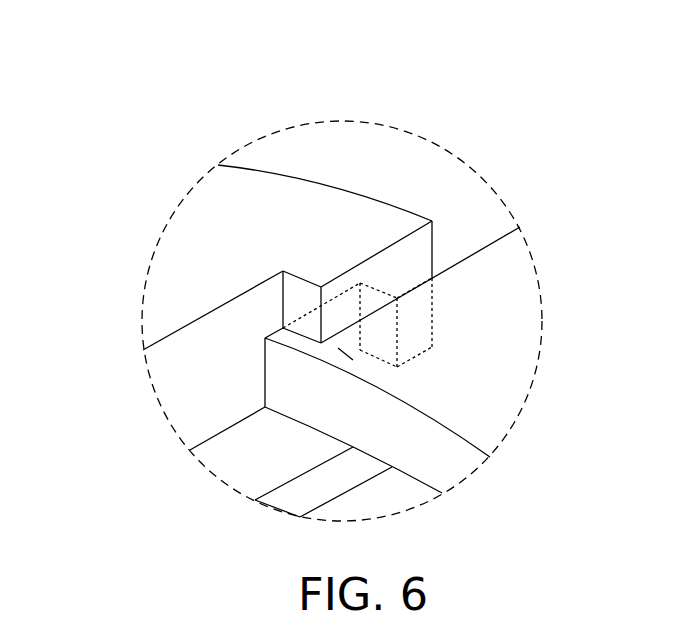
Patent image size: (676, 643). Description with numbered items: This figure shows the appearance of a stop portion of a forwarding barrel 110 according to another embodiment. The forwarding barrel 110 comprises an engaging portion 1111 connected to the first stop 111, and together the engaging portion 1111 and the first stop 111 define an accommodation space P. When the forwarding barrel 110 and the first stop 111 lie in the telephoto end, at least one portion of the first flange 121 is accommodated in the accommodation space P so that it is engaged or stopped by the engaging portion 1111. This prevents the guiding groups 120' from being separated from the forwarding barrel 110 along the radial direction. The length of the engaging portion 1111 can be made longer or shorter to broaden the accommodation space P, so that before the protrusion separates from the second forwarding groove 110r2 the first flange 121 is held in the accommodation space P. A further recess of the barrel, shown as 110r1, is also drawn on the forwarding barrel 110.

The forwarding barrel 110 is at (289, 307).
The first stop 111 is at (397, 225).
The engaging portion 1111 is at (320, 270).
The first recess 110r1 is at (187, 343).
The second forwarding groove 110r2 is at (288, 497).
The first flange 121 is at (285, 363).
The guiding groups 120' is at (394, 439).
The accommodation space P is at (347, 353).